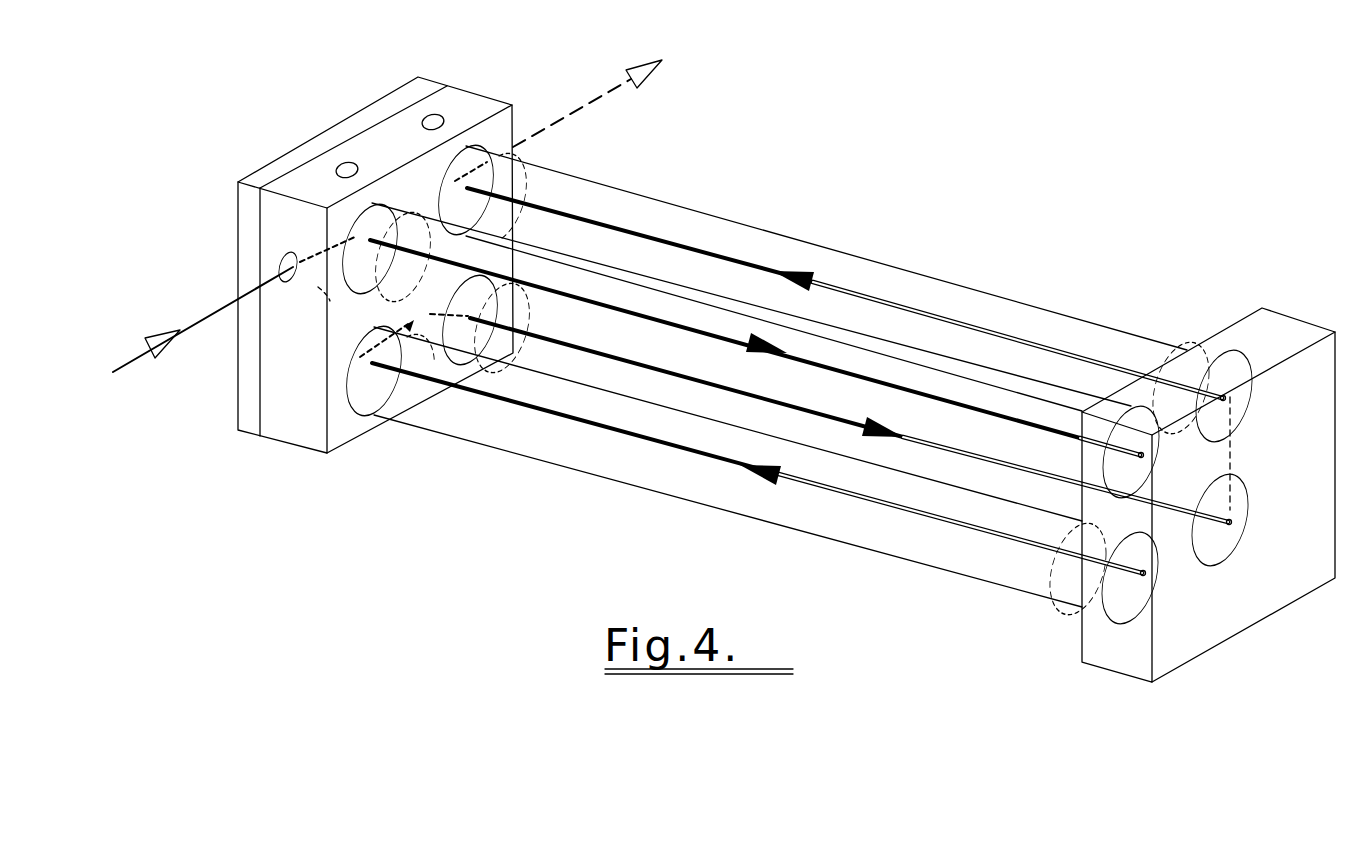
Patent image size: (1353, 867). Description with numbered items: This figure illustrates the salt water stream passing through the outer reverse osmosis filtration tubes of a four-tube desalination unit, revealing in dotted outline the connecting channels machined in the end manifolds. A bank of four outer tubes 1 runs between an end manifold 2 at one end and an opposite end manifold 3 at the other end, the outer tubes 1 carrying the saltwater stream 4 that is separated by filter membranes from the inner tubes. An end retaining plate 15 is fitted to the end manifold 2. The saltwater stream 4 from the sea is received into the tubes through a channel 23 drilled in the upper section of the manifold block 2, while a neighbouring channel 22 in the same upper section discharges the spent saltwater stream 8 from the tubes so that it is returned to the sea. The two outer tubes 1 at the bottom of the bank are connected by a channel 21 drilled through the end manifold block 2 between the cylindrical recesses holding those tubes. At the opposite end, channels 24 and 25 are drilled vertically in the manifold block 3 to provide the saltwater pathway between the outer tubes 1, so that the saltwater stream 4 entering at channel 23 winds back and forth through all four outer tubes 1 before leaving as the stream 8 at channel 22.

The outer tube 1 is at (799, 376).
The end manifold 2 is at (394, 154).
The end manifold 3 is at (1258, 600).
The saltwater stream 4 is at (227, 304).
The saltwater stream returned to the sea 8 is at (587, 86).
The end retaining plate 15 is at (238, 203).
The connecting channel 21 is at (438, 345).
The channel 22 is at (497, 178).
The channel 23 is at (322, 309).
The channel 24 is at (1158, 477).
The channel 25 is at (1233, 452).